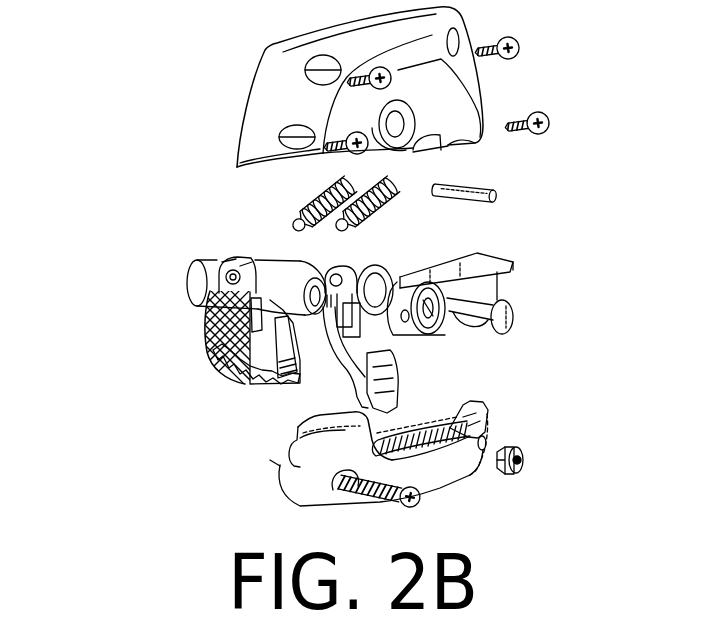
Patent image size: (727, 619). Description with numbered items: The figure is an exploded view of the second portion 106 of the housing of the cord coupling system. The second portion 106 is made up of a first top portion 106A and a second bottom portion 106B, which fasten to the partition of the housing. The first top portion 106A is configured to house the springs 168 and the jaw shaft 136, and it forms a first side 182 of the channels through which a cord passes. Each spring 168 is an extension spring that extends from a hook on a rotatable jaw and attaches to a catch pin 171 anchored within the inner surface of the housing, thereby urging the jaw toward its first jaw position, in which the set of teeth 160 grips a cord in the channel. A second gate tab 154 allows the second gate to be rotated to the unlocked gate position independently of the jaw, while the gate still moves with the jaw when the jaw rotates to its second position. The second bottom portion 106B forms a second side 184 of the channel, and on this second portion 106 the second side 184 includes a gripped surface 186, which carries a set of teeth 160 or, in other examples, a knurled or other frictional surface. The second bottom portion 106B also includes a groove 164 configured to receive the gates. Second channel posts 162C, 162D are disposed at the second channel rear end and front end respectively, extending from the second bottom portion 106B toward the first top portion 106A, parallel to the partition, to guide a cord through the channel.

The second portion of the housing 106 is at (148, 152).
The first top portion 106A is at (257, 80).
The second bottom portion 106B is at (287, 480).
The jaw shaft 136 is at (200, 283).
The second gate tab 154 is at (362, 375).
The set of teeth 160 is at (230, 367).
The second channel post 162C is at (323, 425).
The second channel post 162D is at (495, 413).
The groove 164 is at (467, 433).
The spring 168 is at (298, 207).
The catch pin 171 is at (480, 199).
The first side of the channels 182 is at (463, 143).
The second side of the channel 184 is at (433, 430).
The gripped surface 186 is at (417, 445).